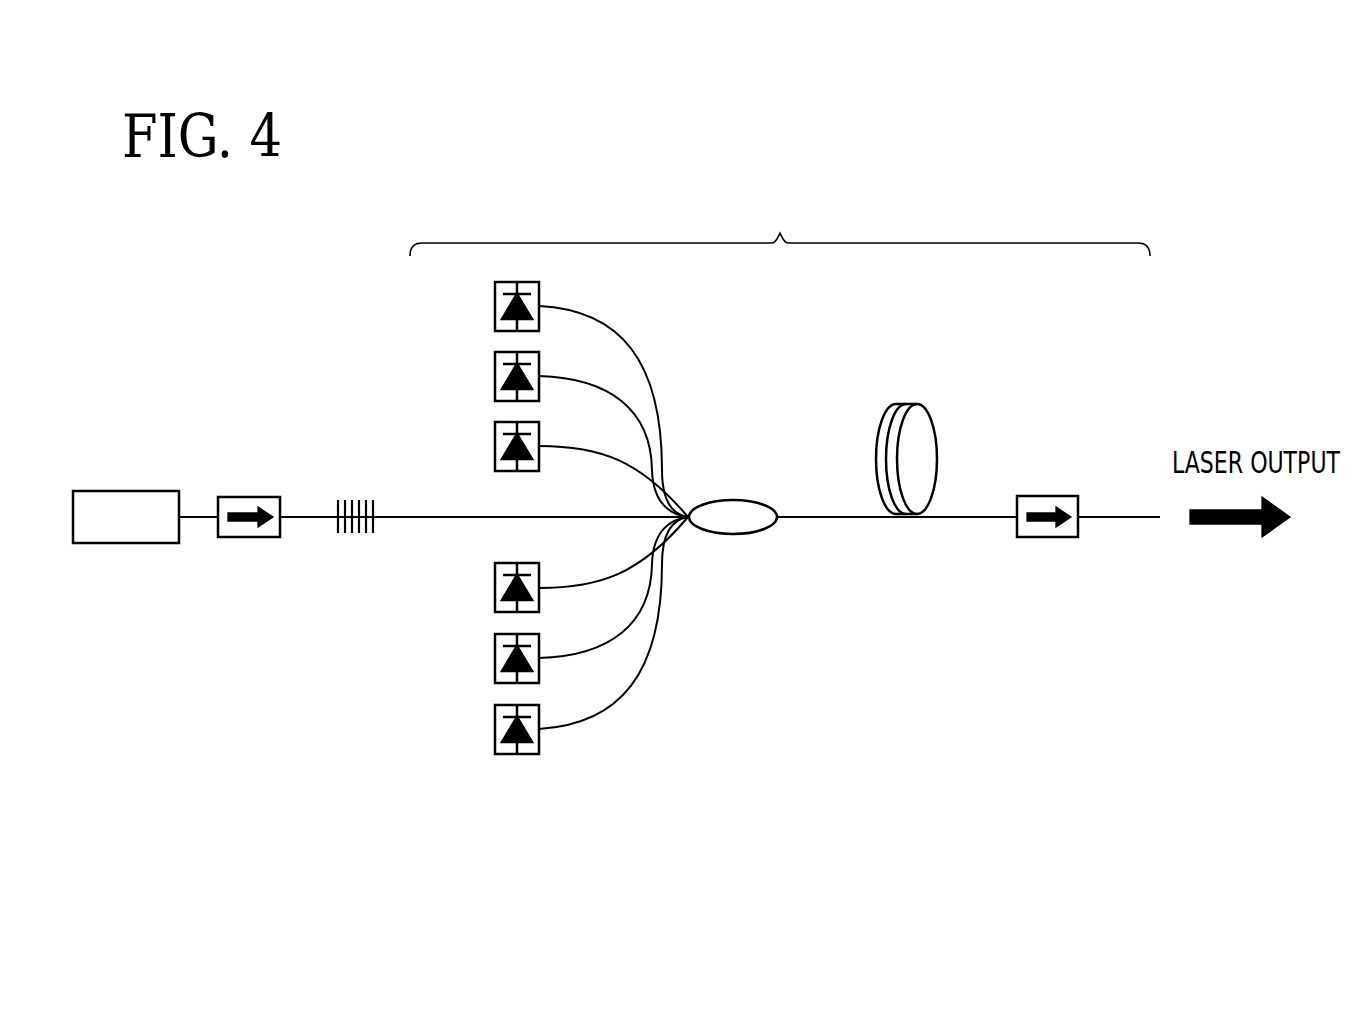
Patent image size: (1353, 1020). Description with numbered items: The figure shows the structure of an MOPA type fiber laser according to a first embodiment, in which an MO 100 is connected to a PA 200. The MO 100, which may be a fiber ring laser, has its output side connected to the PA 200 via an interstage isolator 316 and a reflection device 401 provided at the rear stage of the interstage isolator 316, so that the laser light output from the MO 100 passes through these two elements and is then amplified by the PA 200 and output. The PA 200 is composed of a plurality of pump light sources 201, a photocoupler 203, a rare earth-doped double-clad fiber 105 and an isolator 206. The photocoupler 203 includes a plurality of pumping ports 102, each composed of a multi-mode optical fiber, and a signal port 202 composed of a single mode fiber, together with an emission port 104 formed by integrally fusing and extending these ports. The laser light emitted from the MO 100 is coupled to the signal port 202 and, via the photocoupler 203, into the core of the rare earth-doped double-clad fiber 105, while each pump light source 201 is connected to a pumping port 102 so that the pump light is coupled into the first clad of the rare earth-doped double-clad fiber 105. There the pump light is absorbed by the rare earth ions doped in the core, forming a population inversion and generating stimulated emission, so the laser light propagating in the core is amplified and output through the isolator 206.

The MO 100 is at (126, 491).
The interstage isolator 316 is at (250, 497).
The reflection device 401 is at (358, 500).
The PA 200 is at (780, 223).
The pump light source 201 is at (495, 310).
The pumping port 102 is at (578, 303).
The signal port 202 is at (615, 516).
The photocoupler 203 is at (734, 500).
The emission port 104 is at (797, 520).
The rare earth-doped double-clad fiber 105 is at (901, 403).
The isolator 206 is at (1042, 496).